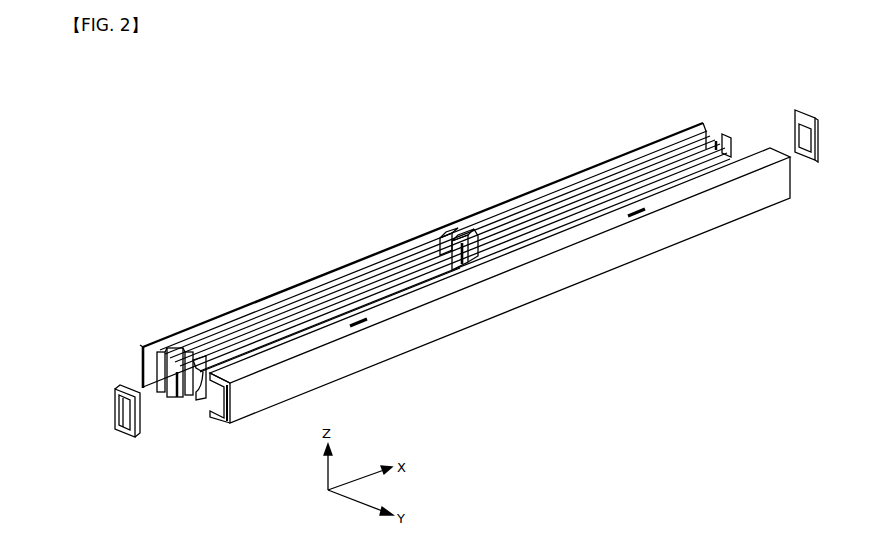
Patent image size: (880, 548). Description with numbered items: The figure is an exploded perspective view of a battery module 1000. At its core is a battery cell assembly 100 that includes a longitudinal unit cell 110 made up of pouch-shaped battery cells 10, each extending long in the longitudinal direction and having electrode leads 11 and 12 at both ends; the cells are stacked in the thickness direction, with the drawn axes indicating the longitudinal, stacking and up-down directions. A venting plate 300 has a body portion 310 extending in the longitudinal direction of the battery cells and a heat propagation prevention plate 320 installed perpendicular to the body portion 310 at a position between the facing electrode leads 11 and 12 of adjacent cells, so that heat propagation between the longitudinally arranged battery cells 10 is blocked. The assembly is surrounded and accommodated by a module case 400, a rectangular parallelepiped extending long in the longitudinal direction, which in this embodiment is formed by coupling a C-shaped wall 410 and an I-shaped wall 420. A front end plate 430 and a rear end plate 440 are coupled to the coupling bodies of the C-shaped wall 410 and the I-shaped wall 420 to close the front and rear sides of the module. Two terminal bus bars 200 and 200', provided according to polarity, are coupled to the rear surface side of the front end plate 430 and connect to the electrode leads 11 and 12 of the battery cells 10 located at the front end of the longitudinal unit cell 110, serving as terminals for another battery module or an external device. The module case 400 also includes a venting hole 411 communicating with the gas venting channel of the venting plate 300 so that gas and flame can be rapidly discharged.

The battery module 1000 is at (217, 124).
The battery cell assembly 100 is at (366, 146).
The longitudinal unit cell 110 is at (497, 130).
The battery cell 10 is at (312, 282).
The electrode lead 12 is at (150, 370).
The electrode lead 11 is at (196, 402).
The venting plate 300 is at (226, 326).
The body portion 310 is at (258, 315).
The heat propagation prevention plate 320 is at (440, 246).
The module case 400 is at (580, 287).
The C-shaped wall 410 is at (467, 310).
The venting hole 411 is at (362, 332).
The I-shaped wall 420 is at (462, 227).
The front end plate 430 is at (140, 434).
The rear end plate 440 is at (811, 110).
The terminal bus bar 200 is at (94, 411).
The terminal bus bar 200' is at (81, 416).